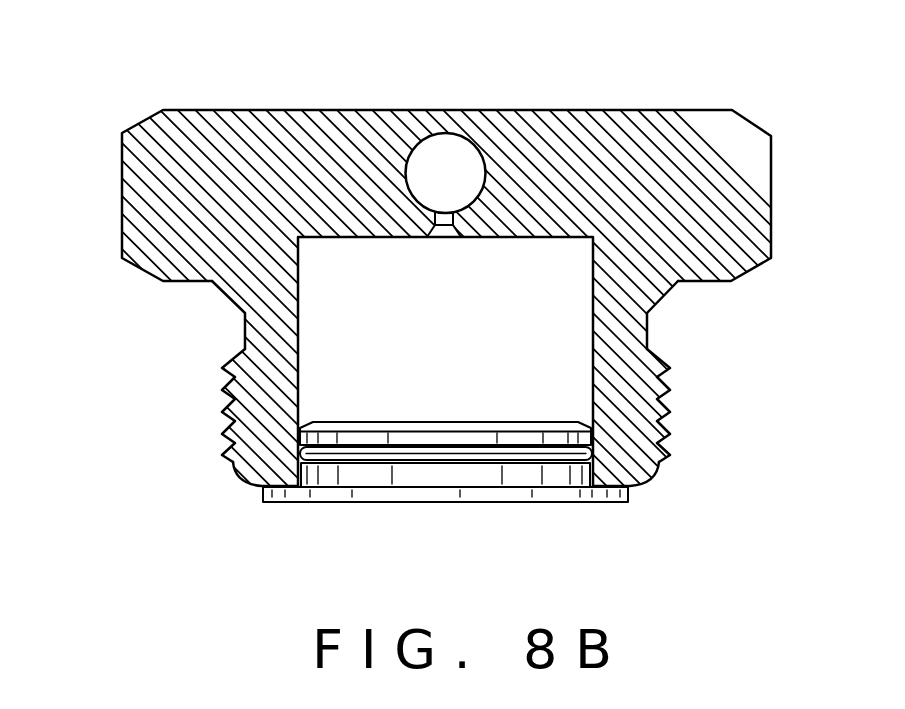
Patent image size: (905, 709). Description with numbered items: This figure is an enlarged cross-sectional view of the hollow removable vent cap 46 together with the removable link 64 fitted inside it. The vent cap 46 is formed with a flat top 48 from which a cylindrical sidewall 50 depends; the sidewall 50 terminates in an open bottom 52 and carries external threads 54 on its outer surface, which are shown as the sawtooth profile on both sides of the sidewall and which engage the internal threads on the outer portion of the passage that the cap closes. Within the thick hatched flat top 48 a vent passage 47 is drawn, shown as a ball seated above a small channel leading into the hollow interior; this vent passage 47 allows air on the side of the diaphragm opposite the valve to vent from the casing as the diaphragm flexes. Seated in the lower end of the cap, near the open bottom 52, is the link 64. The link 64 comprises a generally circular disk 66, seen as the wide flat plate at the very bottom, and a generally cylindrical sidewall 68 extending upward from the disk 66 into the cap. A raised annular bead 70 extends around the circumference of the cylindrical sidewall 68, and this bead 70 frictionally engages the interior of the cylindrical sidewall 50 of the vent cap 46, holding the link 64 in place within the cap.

The vent cap 46 is at (452, 270).
The vent passage 47 is at (443, 212).
The flat top 48 is at (158, 191).
The cylindrical sidewall 50 is at (258, 367).
The open bottom 52 is at (297, 477).
The external threads 54 is at (223, 383).
The link 64 is at (518, 497).
The circular disk 66 is at (338, 503).
The cylindrical sidewall 68 is at (595, 477).
The raised annular bead 70 is at (565, 452).